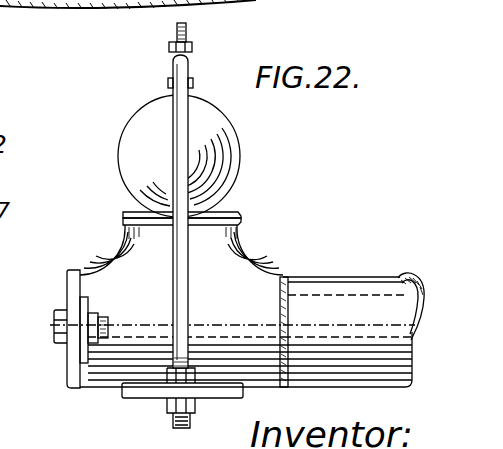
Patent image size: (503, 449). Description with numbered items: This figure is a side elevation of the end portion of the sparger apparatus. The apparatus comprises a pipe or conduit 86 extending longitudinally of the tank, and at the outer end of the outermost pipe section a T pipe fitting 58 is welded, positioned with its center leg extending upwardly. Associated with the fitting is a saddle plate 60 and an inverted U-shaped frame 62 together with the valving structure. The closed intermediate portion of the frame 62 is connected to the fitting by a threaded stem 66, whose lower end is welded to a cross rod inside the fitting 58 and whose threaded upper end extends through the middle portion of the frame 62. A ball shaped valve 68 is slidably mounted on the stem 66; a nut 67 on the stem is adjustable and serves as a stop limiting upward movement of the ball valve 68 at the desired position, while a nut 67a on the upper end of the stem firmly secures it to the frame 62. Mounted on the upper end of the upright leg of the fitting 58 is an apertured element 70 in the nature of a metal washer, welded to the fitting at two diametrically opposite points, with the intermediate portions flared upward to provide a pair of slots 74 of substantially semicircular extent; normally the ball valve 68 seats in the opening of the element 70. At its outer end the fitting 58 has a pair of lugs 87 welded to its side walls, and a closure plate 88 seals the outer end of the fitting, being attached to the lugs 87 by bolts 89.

The T pipe fitting 58 is at (230, 263).
The saddle plate 60 is at (137, 390).
The frame 62 is at (188, 178).
The threaded stem 66 is at (186, 30).
The nut 67 is at (169, 83).
The nut 67a is at (169, 46).
The ball shaped valve 68 is at (225, 143).
The apertured element 70 is at (243, 209).
The slots 74 is at (245, 219).
The pipe or conduit 86 is at (356, 279).
The lugs 87 is at (90, 303).
The closure plate 88 is at (62, 375).
The bolts 89 is at (53, 342).